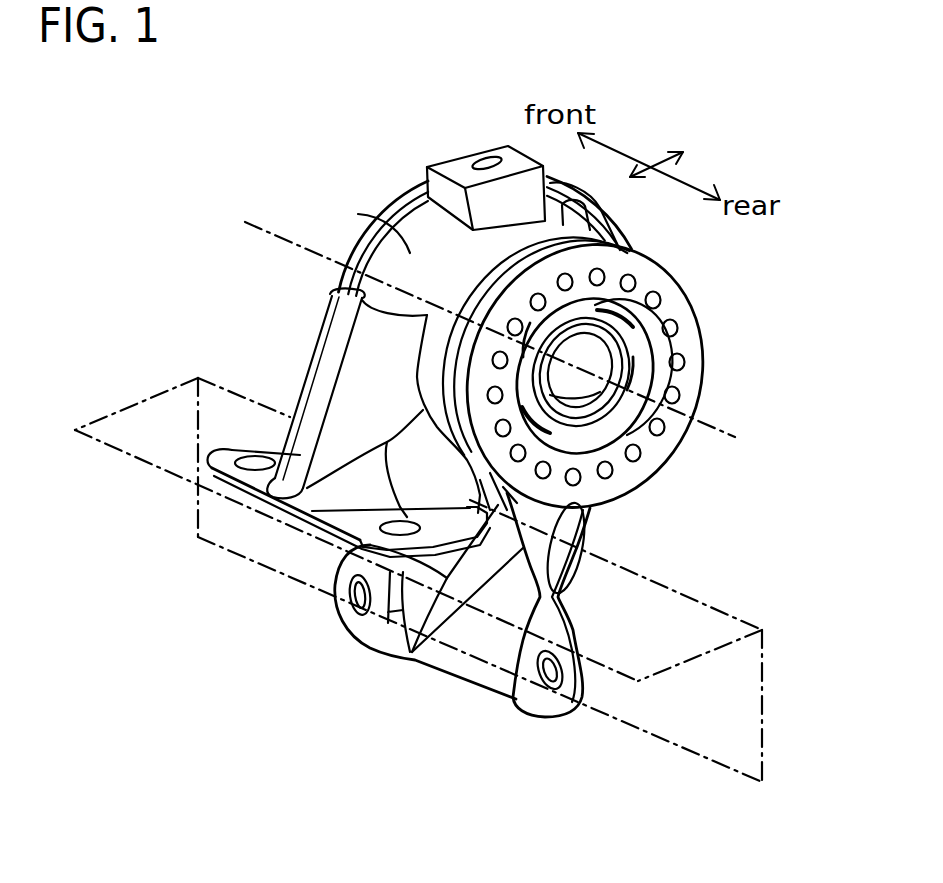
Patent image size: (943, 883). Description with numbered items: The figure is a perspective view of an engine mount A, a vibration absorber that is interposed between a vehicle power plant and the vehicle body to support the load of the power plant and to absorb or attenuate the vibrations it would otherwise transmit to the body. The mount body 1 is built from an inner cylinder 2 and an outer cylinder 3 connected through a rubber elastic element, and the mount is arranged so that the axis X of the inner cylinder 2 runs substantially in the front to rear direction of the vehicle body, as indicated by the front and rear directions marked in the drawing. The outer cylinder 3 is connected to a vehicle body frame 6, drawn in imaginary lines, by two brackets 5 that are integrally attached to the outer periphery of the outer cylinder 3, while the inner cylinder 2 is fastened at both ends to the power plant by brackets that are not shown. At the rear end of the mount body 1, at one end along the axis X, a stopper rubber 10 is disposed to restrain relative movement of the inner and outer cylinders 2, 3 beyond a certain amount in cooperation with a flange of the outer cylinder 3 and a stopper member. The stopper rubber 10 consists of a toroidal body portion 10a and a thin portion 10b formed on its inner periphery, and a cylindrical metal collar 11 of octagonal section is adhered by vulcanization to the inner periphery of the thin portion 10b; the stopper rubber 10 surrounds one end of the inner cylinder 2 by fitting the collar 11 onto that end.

The engine mount A is at (220, 158).
The body 1 is at (423, 240).
The inner cylinder 2 is at (628, 390).
The outer cylinder 3 is at (373, 223).
The brackets 5 is at (325, 373).
The vehicle body frame 6 is at (733, 615).
The stopper rubber 10 is at (606, 376).
The toroidal body portion 10a is at (687, 328).
The thin portion 10b is at (623, 347).
The collar 11 is at (590, 420).
The axis X is at (735, 430).